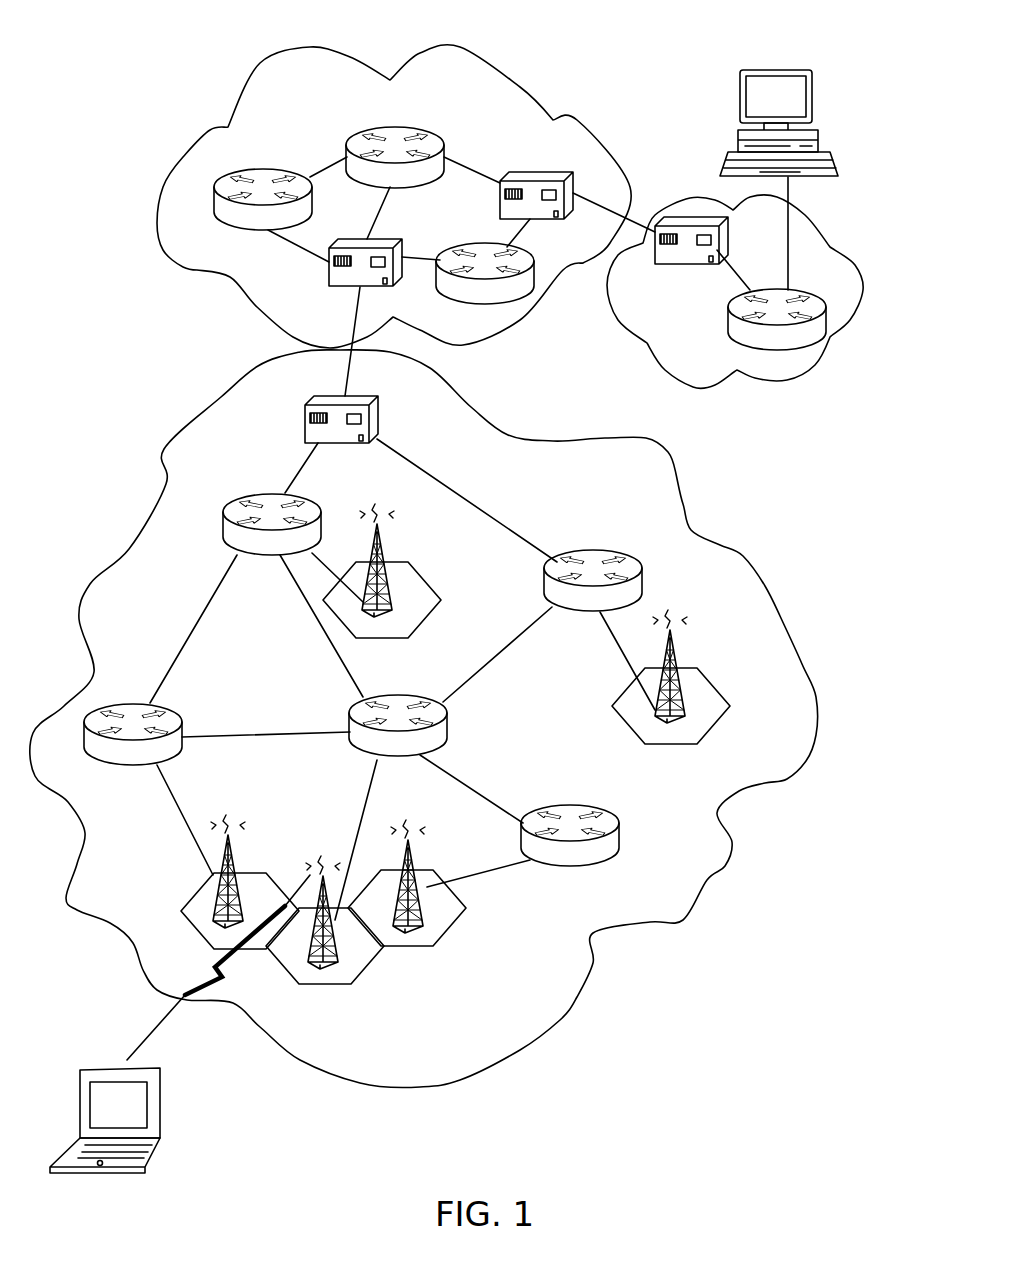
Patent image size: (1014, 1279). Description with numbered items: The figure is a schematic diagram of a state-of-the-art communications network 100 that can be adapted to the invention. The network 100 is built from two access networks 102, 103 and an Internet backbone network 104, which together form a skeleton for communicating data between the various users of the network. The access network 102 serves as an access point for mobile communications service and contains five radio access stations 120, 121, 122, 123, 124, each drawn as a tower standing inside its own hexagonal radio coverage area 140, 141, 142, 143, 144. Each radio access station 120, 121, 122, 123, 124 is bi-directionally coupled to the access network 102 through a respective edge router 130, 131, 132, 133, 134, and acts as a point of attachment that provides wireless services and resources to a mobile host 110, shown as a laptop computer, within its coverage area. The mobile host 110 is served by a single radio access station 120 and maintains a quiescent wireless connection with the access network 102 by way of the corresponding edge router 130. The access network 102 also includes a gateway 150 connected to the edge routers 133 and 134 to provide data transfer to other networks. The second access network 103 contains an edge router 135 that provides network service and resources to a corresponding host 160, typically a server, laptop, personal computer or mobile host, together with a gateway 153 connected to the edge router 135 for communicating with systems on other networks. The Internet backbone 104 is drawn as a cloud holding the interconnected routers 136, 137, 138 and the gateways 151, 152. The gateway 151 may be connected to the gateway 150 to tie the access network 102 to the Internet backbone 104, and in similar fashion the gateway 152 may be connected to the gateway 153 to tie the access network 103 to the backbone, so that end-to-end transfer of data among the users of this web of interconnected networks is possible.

The communications network 100 is at (124, 40).
The access network 102 is at (685, 920).
The access network 103 is at (803, 365).
The Internet backbone network 104 is at (165, 243).
The mobile host 110 is at (155, 1142).
The radio access station 120 is at (338, 955).
The radio access station 121 is at (468, 910).
The radio access station 122 is at (182, 907).
The radio access station 123 is at (386, 545).
The radio access station 124 is at (680, 655).
The edge router 130 is at (438, 698).
The edge router 131 is at (568, 806).
The edge router 132 is at (128, 704).
The edge router 133 is at (264, 494).
The edge router 134 is at (578, 550).
The edge router 135 is at (752, 290).
The router 136 is at (470, 246).
The router 137 is at (268, 170).
The router 138 is at (430, 128).
The radio coverage area 140 is at (378, 958).
The radio coverage area 141 is at (440, 880).
The radio coverage area 142 is at (200, 886).
The radio coverage area 143 is at (441, 598).
The radio coverage area 144 is at (714, 726).
The gateway 150 is at (352, 444).
The gateway 151 is at (329, 281).
The gateway 152 is at (556, 219).
The gateway 153 is at (661, 265).
The corresponding host 160 is at (762, 68).